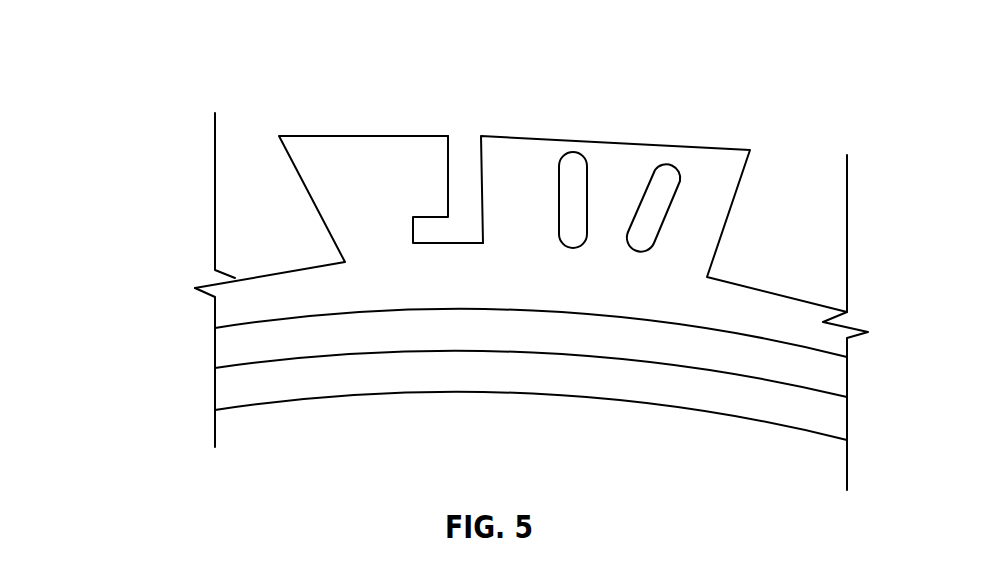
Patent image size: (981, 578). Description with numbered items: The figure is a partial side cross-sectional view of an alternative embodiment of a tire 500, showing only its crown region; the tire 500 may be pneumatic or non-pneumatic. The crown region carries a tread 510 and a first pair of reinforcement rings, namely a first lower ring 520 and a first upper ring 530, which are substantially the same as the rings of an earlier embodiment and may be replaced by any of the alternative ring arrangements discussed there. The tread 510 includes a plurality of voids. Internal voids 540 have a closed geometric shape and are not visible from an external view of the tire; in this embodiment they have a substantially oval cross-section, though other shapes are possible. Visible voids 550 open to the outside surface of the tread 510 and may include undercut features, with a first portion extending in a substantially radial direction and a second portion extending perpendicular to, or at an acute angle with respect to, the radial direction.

The tire 500 is at (165, 82).
The tread 510 is at (527, 137).
The first lower ring 520 is at (252, 362).
The first upper ring 530 is at (288, 315).
The internal voids 540 is at (667, 156).
The visible voids 550 is at (425, 216).